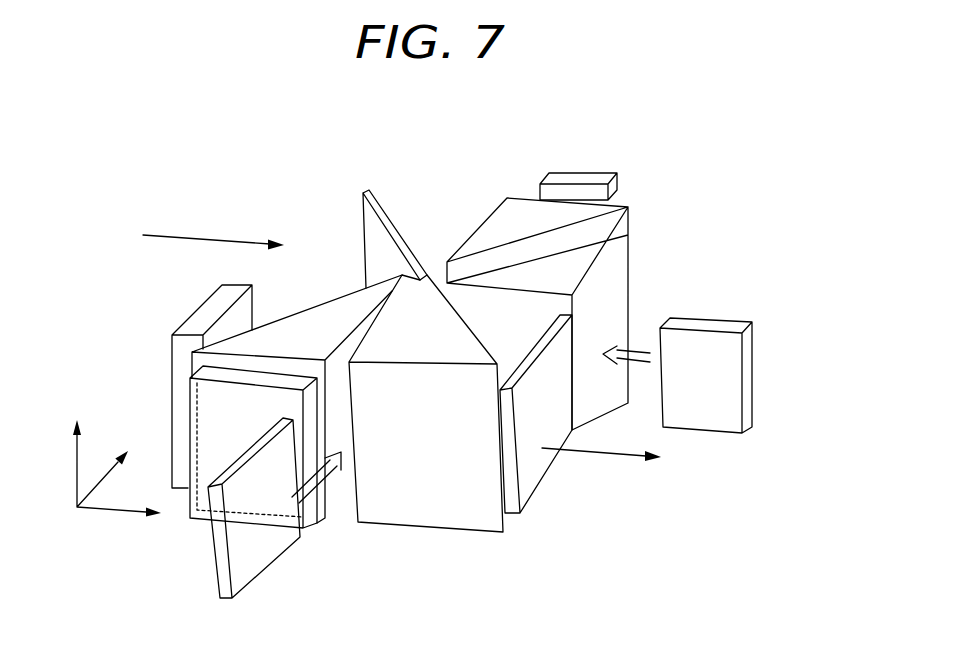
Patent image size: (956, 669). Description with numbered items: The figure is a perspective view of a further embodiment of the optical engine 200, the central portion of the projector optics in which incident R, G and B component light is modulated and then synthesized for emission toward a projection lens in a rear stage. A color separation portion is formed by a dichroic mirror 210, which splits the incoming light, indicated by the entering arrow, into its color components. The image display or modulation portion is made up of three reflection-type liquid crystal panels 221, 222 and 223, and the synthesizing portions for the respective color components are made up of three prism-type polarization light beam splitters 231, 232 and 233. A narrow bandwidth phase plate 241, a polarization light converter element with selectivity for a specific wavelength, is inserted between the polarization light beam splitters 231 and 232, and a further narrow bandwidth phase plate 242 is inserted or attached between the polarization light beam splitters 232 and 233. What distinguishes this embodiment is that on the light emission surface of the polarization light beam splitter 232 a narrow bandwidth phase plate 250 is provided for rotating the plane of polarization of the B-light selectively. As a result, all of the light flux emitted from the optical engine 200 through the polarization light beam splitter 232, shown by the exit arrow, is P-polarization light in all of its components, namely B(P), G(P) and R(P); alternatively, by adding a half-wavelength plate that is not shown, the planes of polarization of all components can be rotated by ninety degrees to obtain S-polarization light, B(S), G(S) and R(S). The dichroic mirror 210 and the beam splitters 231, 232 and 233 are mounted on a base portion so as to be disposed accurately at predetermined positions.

The optical engine 200 is at (420, 148).
The dichroic mirror 210 is at (378, 203).
The reflection-type liquid crystal panel 221 is at (584, 178).
The reflection-type liquid crystal panel 222 is at (207, 435).
The reflection-type liquid crystal panel 223 is at (206, 316).
The prism-type polarization light beam splitter 231 is at (630, 224).
The prism-type polarization light beam splitter 232 is at (495, 368).
The prism-type polarization light beam splitter 233 is at (293, 337).
The narrow bandwidth phase plate 241 is at (709, 343).
The narrow bandwidth phase plate 242 is at (257, 567).
The narrow bandwidth phase plate 250 is at (531, 486).